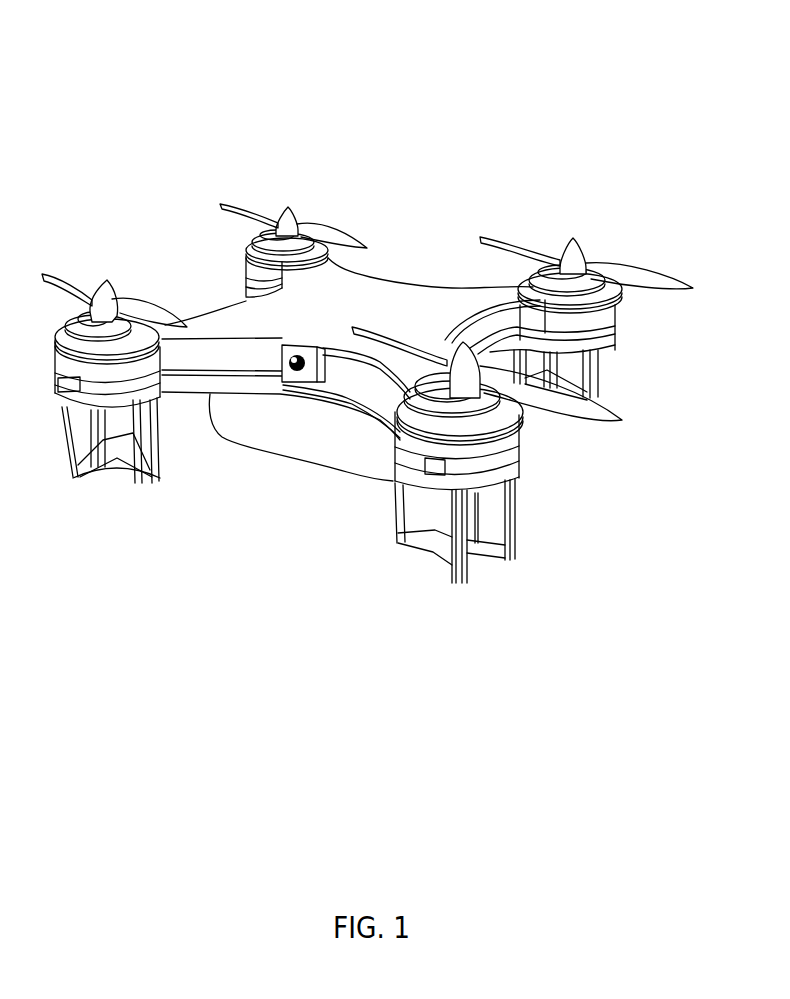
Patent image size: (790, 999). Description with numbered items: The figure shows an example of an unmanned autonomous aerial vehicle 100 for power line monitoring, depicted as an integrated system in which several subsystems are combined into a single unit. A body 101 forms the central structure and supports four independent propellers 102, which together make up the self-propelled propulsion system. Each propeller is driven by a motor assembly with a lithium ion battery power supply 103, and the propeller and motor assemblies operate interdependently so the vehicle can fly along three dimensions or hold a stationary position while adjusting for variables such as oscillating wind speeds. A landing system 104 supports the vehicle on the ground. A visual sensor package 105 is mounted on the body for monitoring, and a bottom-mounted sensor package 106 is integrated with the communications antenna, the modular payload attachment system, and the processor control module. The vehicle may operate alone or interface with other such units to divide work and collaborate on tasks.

The unmanned autonomous aerial vehicle 100 is at (604, 92).
The body 101 is at (367, 277).
The propeller 102 is at (62, 273).
The motor assembly and power supply 103 is at (255, 241).
The landing system 104 is at (600, 398).
The visual sensor package 105 is at (297, 382).
The bottom-mounted sensor package 106 is at (357, 472).